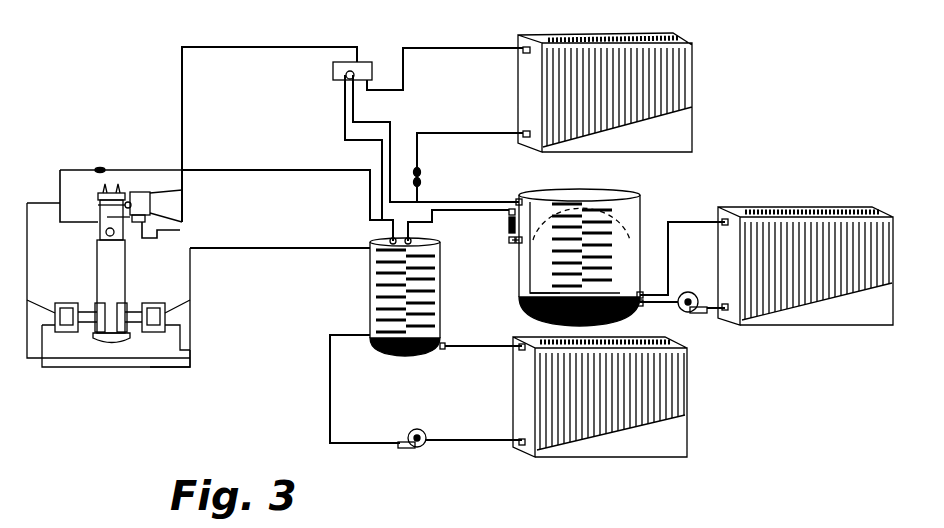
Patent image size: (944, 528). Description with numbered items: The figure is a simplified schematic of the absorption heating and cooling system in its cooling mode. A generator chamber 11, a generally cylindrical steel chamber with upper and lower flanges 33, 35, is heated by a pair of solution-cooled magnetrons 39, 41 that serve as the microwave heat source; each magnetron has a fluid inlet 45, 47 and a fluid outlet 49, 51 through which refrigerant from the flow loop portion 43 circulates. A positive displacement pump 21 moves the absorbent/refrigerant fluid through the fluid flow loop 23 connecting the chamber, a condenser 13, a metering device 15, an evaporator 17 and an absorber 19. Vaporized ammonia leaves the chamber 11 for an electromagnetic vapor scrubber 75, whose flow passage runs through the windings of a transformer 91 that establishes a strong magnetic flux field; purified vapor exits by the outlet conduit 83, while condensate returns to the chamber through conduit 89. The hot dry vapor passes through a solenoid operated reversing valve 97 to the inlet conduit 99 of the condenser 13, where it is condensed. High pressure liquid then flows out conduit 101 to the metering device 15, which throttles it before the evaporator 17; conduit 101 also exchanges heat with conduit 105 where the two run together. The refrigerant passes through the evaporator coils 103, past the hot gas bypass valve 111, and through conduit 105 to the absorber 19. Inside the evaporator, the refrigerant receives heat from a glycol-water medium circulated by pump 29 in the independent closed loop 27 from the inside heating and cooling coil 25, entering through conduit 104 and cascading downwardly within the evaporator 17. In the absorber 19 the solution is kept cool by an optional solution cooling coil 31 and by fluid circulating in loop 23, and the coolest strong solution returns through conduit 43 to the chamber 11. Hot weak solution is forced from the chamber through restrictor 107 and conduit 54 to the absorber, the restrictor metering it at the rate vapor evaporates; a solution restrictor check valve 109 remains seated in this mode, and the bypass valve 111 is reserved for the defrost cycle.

The generator chamber 11 is at (127, 280).
The condenser 13 is at (697, 107).
The metering device 15 is at (422, 175).
The evaporator 17 is at (620, 190).
The absorber 19 is at (442, 313).
The positive displacement pump 21 is at (427, 447).
The fluid flow loop 23 is at (350, 445).
The inside heating and cooling coil 25 is at (777, 207).
The loop 27 is at (688, 220).
The pump 29 is at (695, 312).
The solution cooling coil 31 is at (688, 427).
The upper flange 33 is at (98, 190).
The lower flange 35 is at (123, 347).
The magnetron 39 is at (163, 367).
The magnetron 41 is at (60, 303).
The flow loop portion 43 is at (253, 247).
The fluid inlet 45 is at (167, 312).
The fluid inlet 47 is at (43, 357).
The fluid outlet 49 is at (180, 348).
The fluid outlet 51 is at (30, 300).
The conduit 54 is at (252, 168).
The electromagnetic vapor scrubber 75 is at (192, 190).
The outlet conduit 83 is at (182, 98).
The conduit 89 is at (160, 237).
The transformer 91 is at (138, 192).
The solenoid operated reversing valve 97 is at (363, 62).
The inlet conduit 99 is at (433, 47).
The conduit 101 is at (445, 132).
The coils 103 is at (615, 230).
The conduit 104 is at (618, 292).
The conduit 105 is at (342, 100).
The restrictor 107 is at (103, 168).
The solution restrictor check valve 109 is at (507, 233).
The hot gas bypass valve 111 is at (507, 214).